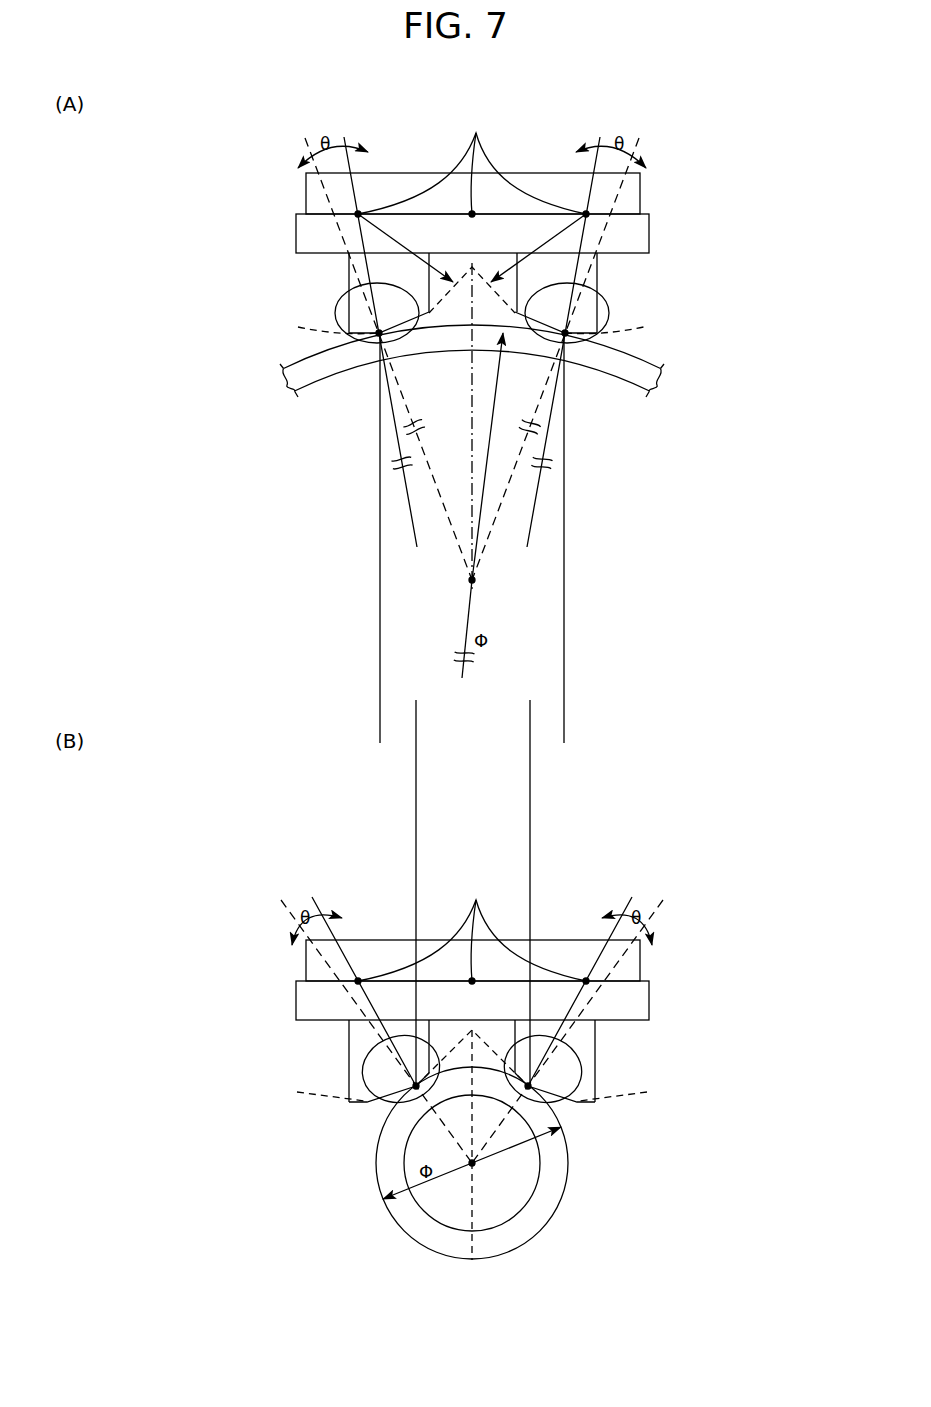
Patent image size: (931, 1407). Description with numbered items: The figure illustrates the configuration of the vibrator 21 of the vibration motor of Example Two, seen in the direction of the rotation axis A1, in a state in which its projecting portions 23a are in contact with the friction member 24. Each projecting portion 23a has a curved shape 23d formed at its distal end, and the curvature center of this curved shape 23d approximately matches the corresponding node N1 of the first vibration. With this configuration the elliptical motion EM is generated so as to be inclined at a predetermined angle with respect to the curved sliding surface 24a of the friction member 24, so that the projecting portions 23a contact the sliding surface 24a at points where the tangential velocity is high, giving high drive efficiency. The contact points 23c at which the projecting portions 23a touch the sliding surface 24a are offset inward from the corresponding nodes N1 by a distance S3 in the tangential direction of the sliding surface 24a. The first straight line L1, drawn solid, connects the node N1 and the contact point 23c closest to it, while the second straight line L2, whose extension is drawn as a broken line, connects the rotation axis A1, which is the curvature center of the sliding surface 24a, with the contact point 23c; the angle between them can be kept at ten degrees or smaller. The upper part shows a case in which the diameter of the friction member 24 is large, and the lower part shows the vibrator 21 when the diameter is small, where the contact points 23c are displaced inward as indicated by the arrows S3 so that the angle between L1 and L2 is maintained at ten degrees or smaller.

The vibrator 21 is at (176, 126).
The projecting portion 23a is at (297, 230).
The contact point 23c is at (343, 318).
The curved shape 23d is at (347, 267).
The friction member 24 is at (280, 351).
The sliding surface 24a is at (298, 327).
The elliptical motion EM is at (360, 288).
The node of the first vibration N1 is at (472, 545).
The first straight line L1 is at (473, 598).
The second straight line L2 is at (471, 636).
The rotation axis A1 is at (488, 879).
The distance S3 is at (415, 731).